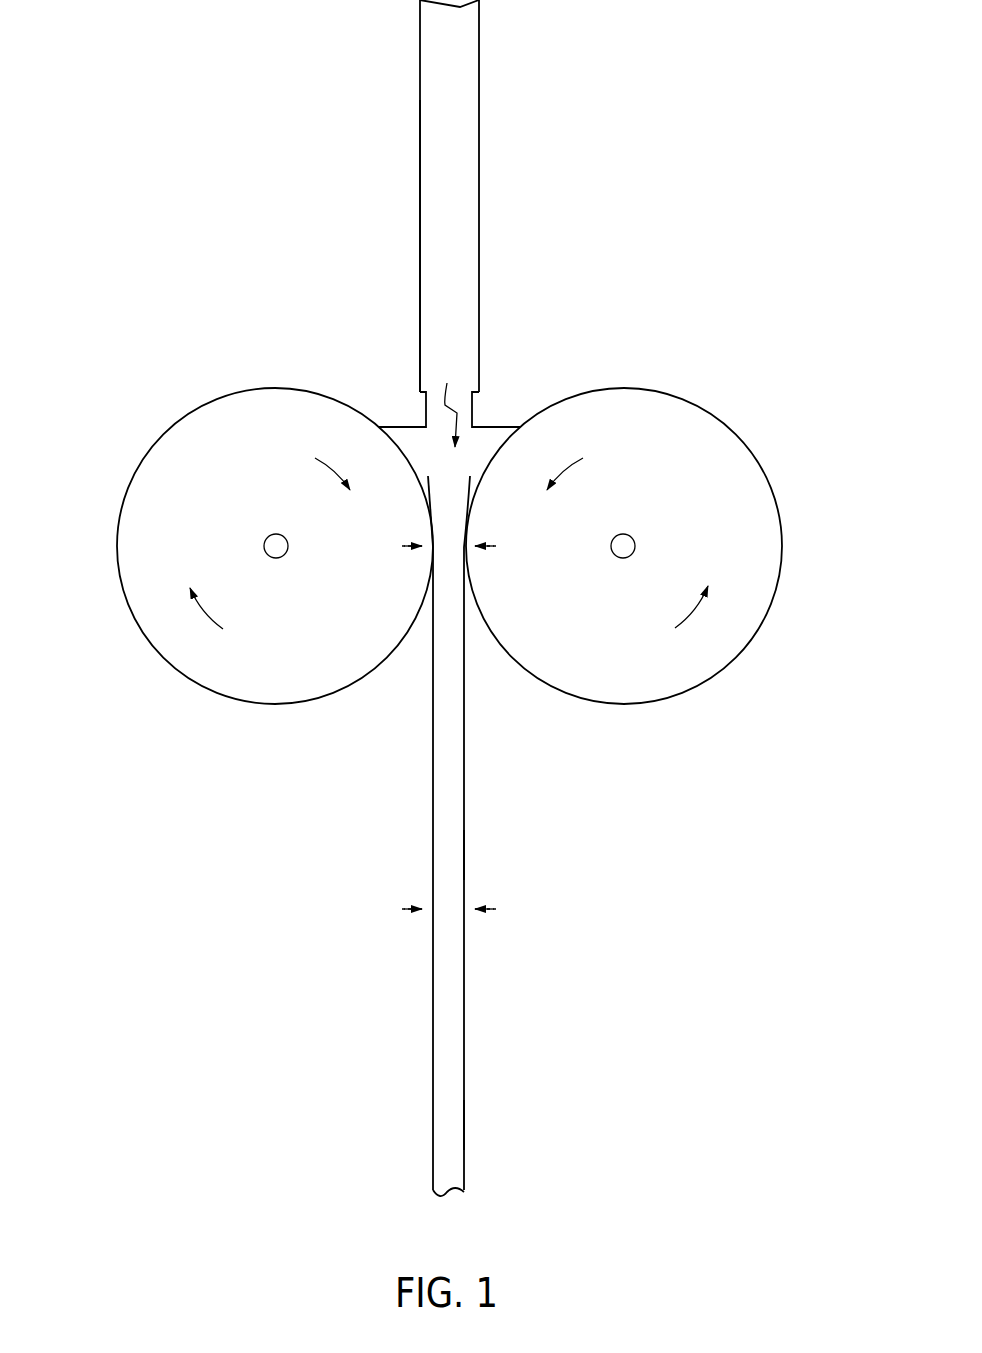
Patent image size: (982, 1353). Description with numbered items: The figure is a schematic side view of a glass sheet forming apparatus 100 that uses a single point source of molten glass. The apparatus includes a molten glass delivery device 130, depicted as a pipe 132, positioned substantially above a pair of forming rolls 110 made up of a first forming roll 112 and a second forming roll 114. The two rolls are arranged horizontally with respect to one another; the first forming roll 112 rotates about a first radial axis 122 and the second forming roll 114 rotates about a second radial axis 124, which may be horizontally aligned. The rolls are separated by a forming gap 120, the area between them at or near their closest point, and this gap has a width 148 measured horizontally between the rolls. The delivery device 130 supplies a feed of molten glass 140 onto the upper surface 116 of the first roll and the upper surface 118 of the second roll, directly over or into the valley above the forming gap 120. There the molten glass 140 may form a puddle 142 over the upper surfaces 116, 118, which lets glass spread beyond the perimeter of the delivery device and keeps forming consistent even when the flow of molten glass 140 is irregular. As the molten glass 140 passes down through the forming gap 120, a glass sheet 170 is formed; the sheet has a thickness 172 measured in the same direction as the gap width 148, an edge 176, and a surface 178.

The glass sheet forming apparatus 100 is at (741, 298).
The pair of forming rolls 110 is at (122, 390).
The first forming roll 112 is at (278, 387).
The second forming roll 114 is at (622, 388).
The upper surface of the first forming roll 116 is at (423, 486).
The upper surface of the second forming roll 118 is at (475, 486).
The forming gap 120 is at (448, 401).
The first radial axis 122 is at (276, 533).
The second radial axis 124 is at (623, 533).
The molten glass delivery device 130 is at (480, 113).
The pipe 132 is at (418, 168).
The molten glass 140 is at (493, 427).
The puddle 142 is at (432, 450).
The width of the forming gap 148 is at (455, 548).
The glass sheet 170 is at (466, 1007).
The thickness of the glass sheet 172 is at (455, 912).
The edge of the glass sheet 176 is at (450, 863).
The surface of the glass sheet 178 is at (467, 1129).